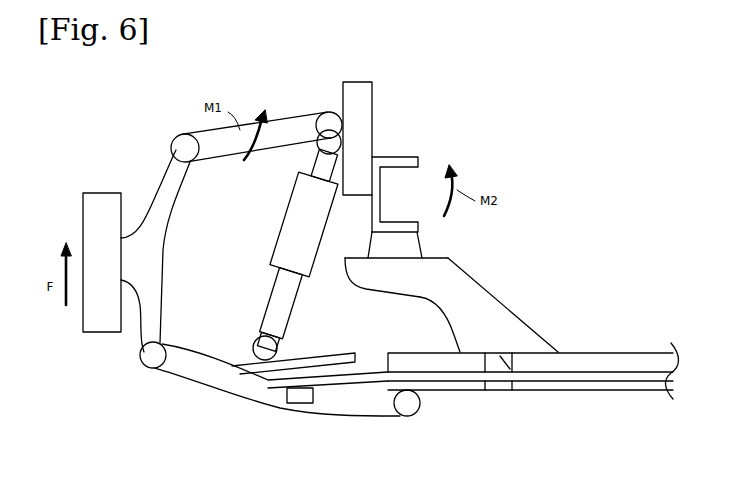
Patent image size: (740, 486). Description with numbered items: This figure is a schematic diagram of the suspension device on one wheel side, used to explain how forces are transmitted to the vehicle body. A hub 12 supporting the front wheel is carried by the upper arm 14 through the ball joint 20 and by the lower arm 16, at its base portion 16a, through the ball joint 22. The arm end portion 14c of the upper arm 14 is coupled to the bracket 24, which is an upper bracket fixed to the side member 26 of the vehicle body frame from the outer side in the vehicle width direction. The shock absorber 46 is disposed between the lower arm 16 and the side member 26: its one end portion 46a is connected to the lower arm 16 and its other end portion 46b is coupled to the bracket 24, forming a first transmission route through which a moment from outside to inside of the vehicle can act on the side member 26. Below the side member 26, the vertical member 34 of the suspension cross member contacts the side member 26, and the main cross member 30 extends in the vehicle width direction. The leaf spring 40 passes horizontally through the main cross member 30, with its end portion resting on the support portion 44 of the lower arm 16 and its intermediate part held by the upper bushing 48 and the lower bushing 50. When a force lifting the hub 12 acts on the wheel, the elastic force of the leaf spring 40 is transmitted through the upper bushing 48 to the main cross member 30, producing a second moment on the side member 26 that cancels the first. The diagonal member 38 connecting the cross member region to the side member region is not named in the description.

The hub 12 is at (101, 192).
The upper arm 14 is at (291, 128).
The arm end portion 14c is at (329, 113).
The lower arm 16 is at (332, 418).
The base portion 16a is at (320, 357).
The ball joint 20 is at (179, 142).
The ball joint 22 is at (150, 370).
The bracket 24 is at (373, 100).
The side member 26 is at (400, 156).
The main cross member 30 is at (634, 352).
The vertical member 34 is at (424, 246).
The strut 38 is at (483, 283).
The leaf spring 40 is at (612, 392).
The support portion 44 is at (292, 405).
The shock absorber 46 is at (285, 230).
The one end portion 46a is at (257, 343).
The other end portion 46b is at (313, 150).
The upper bushing 48 is at (516, 362).
The lower bushing 50 is at (499, 392).